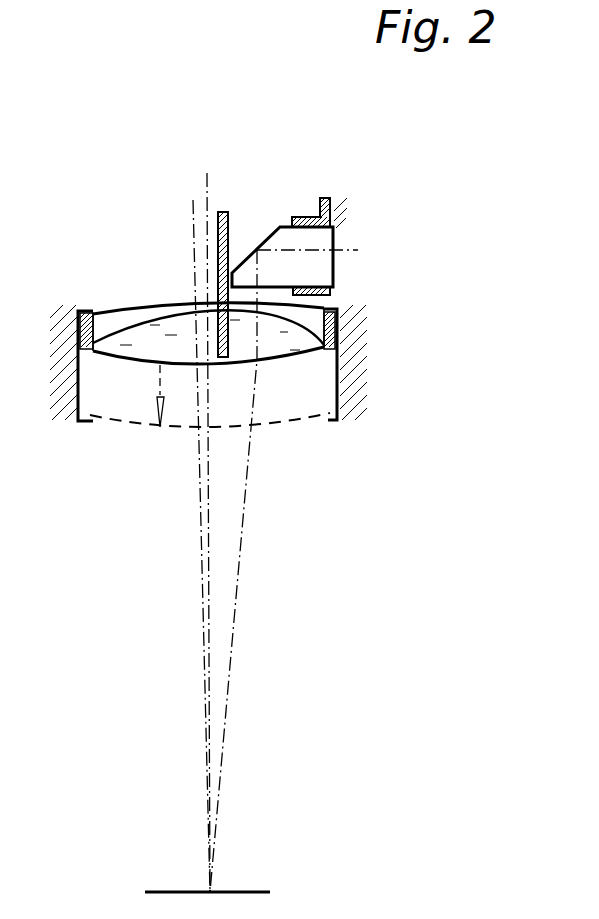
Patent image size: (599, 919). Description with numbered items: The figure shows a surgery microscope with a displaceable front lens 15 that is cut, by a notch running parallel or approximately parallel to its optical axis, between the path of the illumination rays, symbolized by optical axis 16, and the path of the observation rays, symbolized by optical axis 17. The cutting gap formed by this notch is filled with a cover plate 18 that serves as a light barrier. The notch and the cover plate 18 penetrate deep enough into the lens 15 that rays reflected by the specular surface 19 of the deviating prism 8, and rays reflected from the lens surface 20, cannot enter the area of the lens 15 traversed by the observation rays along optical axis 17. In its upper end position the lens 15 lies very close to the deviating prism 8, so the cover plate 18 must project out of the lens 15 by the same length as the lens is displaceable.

The deviating prism 8 is at (328, 238).
The displaceable front lens 15 is at (142, 308).
The optical axis of the illumination rays 16 is at (237, 595).
The optical axis of the observation rays 17 is at (201, 578).
The cover plate 18 is at (228, 218).
The specular surface 19 is at (256, 250).
The lens surface 20 is at (275, 362).